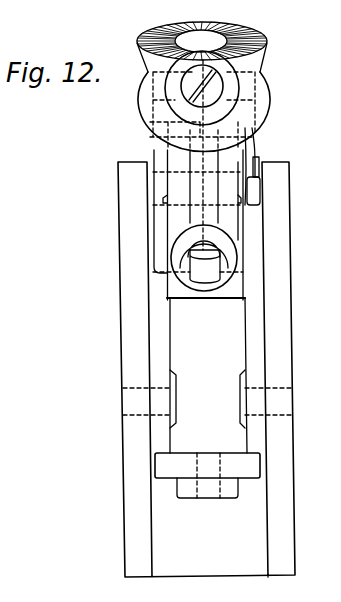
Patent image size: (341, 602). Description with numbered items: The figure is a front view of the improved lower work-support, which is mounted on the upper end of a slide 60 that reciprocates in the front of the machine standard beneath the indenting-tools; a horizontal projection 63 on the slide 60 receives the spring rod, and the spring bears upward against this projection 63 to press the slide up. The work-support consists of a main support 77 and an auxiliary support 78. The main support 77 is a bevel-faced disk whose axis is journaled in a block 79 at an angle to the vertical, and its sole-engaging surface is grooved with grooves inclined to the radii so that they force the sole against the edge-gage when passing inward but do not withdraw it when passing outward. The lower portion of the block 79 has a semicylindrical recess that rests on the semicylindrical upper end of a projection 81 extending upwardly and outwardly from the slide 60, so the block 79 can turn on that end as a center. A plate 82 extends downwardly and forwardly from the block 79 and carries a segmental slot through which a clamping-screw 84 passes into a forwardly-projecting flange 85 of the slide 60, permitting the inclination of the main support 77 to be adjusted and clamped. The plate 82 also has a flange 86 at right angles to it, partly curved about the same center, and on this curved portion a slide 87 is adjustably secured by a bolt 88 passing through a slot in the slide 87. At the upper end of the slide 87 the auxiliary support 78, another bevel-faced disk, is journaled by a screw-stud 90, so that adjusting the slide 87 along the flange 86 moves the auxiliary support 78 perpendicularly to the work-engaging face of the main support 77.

The main support 77 is at (243, 27).
The auxiliary support 78 is at (266, 98).
The block 79 is at (222, 82).
The screw-stud 90 is at (181, 77).
The projection 81 is at (256, 148).
The flange 86 is at (249, 160).
The clamping-screw 84 is at (258, 187).
The plate 82 is at (238, 228).
The bolt 88 is at (218, 262).
The slide 87 is at (182, 186).
The flange 85 is at (157, 246).
The slide 60 is at (283, 321).
The projection 63 is at (255, 465).